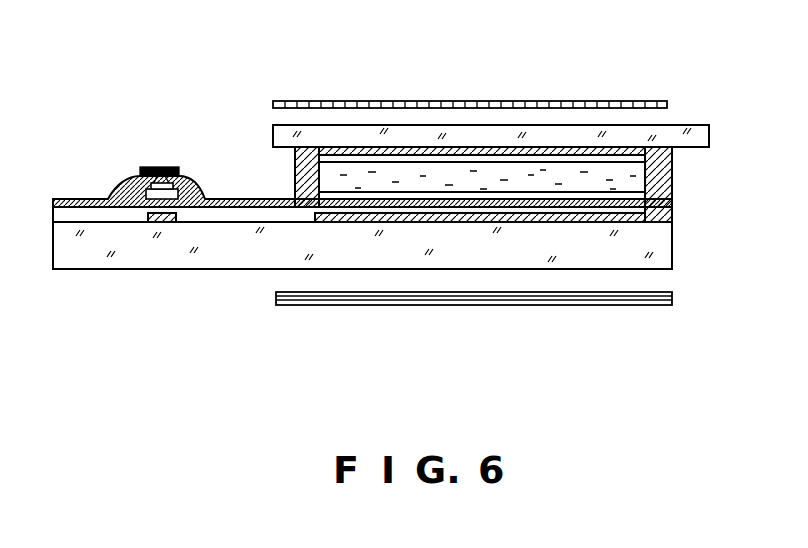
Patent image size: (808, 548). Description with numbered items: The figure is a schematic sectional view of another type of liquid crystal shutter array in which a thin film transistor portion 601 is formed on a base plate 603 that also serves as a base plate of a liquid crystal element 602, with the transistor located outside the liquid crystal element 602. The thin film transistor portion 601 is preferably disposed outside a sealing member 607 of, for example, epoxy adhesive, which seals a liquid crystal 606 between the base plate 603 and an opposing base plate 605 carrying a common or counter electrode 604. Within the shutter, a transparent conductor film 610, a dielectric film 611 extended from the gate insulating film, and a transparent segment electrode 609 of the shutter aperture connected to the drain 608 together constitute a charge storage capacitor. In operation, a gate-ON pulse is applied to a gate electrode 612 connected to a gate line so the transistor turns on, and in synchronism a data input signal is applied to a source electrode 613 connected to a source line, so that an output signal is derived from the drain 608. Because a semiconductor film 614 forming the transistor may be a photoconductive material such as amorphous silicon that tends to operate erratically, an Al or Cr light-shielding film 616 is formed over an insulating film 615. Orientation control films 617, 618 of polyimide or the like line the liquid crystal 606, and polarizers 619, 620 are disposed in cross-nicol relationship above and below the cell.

The thin film transistor portion 601 is at (157, 210).
The liquid crystal element 602 is at (535, 123).
The base plate 603 is at (662, 246).
The common electrode 604 is at (477, 152).
The opposing base plate 605 is at (700, 135).
The liquid crystal 606 is at (637, 180).
The sealing member 607 is at (302, 177).
The drain 608 is at (180, 186).
The transparent segment electrode 609 is at (395, 197).
The transparent conductor film 610 is at (397, 213).
The dielectric film 611 is at (325, 213).
The gate electrode 612 is at (168, 225).
The source electrode 613 is at (140, 193).
The semiconductor film 614 is at (150, 203).
The insulating film 615 is at (163, 178).
The light-shielding film 616 is at (150, 167).
The orientation control film 617 is at (335, 157).
The orientation control film 618 is at (460, 197).
The polarizer 619 is at (587, 101).
The polarizer 620 is at (673, 296).